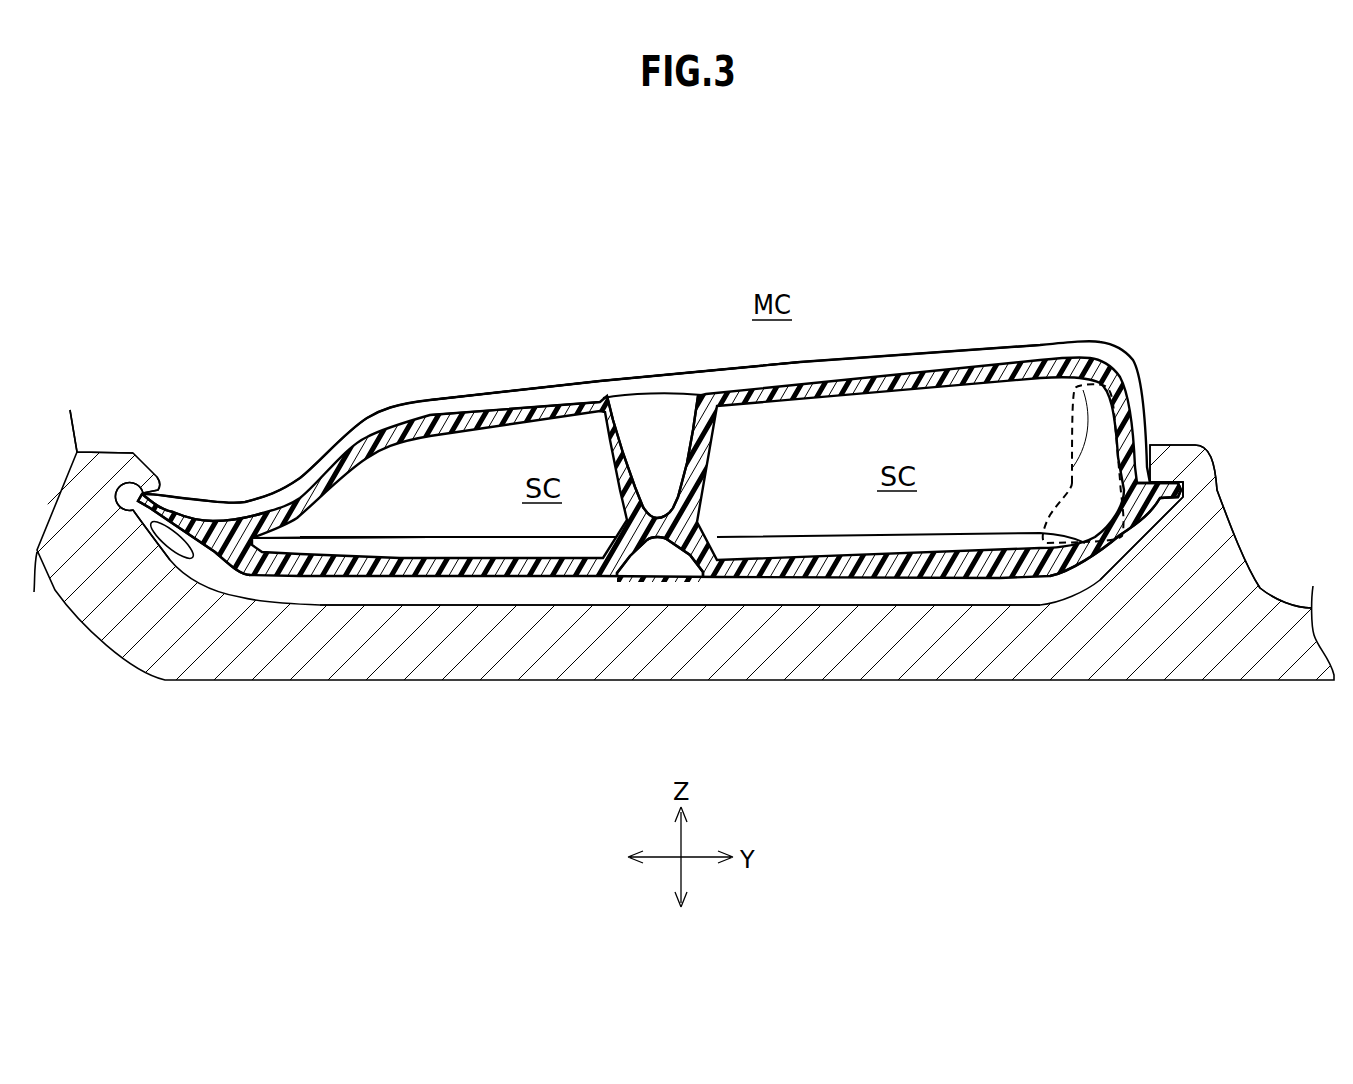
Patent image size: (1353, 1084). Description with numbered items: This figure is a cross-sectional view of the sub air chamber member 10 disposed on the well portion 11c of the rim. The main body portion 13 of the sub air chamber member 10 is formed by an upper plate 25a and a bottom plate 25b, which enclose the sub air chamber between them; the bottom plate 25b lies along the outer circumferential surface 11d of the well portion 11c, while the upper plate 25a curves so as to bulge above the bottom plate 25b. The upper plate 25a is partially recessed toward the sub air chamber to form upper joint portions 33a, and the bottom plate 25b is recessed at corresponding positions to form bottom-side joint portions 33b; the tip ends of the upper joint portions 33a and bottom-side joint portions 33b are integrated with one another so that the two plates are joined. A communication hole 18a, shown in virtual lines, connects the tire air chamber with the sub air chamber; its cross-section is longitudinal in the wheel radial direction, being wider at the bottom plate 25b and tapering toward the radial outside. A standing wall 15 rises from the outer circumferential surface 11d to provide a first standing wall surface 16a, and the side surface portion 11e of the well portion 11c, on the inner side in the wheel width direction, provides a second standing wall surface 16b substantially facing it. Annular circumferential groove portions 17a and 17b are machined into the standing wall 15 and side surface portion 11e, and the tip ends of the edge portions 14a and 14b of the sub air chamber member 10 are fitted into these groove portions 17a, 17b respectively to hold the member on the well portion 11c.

The sub air chamber member 10 is at (861, 344).
The well portion 11c is at (871, 593).
The outer circumferential surface 11d is at (453, 604).
The side surface portion 11e is at (117, 528).
The main body portion 13 is at (554, 316).
The edge portion 14a is at (1160, 490).
The edge portion 14b is at (220, 523).
The standing wall 15 is at (1197, 513).
The first standing wall surface 16a is at (1146, 523).
The second standing wall surface 16b is at (182, 563).
The groove portion 17a is at (1193, 501).
The groove portion 17b is at (128, 478).
The communication hole 18a is at (1047, 357).
The upper plate 25a is at (575, 383).
The bottom plate 25b is at (480, 550).
The upper joint portion 33a is at (657, 443).
The bottom-side joint portion 33b is at (660, 556).